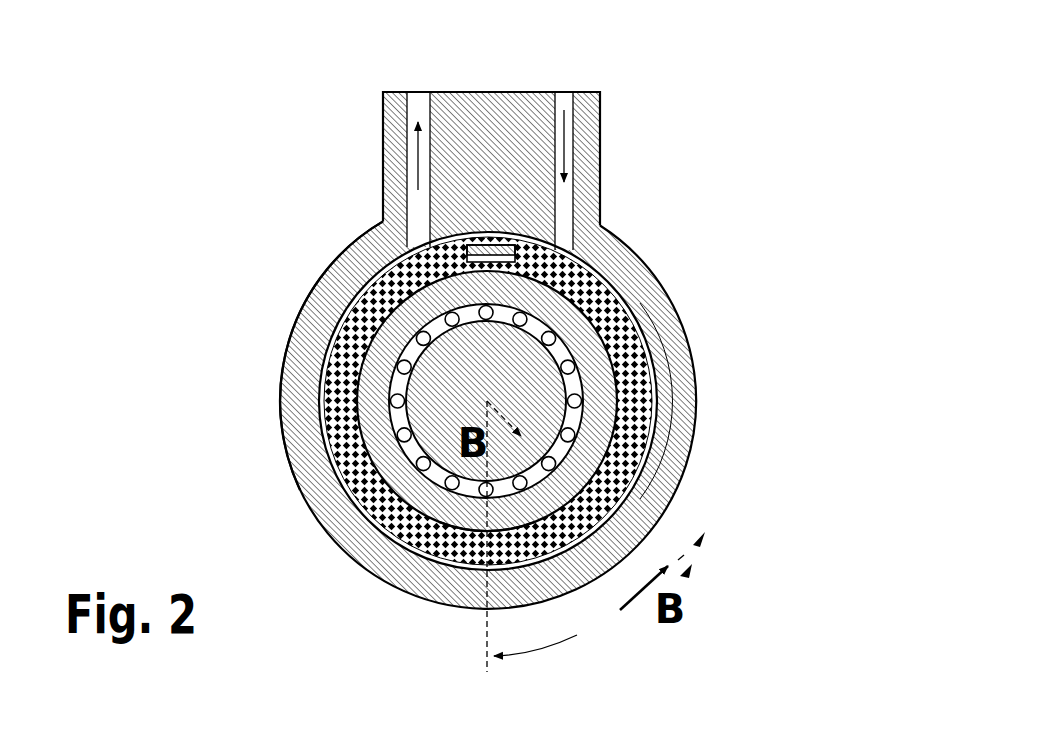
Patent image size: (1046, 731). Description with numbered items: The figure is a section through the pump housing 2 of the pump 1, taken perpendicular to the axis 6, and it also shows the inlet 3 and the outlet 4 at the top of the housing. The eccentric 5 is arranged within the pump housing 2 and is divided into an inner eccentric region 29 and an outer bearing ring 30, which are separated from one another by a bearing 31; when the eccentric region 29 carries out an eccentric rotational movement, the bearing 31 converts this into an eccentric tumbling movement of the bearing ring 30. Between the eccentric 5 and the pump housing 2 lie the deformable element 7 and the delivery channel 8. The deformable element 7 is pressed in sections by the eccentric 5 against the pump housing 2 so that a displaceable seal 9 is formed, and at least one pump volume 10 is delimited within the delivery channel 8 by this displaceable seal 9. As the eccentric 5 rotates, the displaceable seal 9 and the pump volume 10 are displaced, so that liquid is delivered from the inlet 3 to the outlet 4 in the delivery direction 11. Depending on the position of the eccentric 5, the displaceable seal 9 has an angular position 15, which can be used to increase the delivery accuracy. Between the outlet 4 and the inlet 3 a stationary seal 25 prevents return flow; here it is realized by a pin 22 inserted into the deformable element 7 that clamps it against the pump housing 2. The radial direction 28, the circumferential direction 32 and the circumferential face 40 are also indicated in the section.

The pump 1 is at (318, 196).
The pump housing 2 is at (562, 577).
The inlet 3 is at (567, 91).
The outlet 4 is at (418, 91).
The eccentric 5 is at (440, 572).
The axis 6 is at (632, 312).
The deformable element 7 is at (345, 472).
The delivery channel 8 is at (663, 383).
The displaceable seal 9 is at (472, 580).
The pump volume 10 is at (650, 432).
The delivery direction 11 is at (407, 128).
The angular position 15 is at (533, 653).
The pin 22 is at (510, 225).
The stationary seal 25 is at (478, 230).
The radial direction 28 is at (670, 557).
The eccentric region 29 is at (489, 400).
The bearing ring 30 is at (615, 366).
The bearing 31 is at (556, 356).
The circumferential direction 32 is at (690, 550).
The circumferential face 40 is at (300, 322).